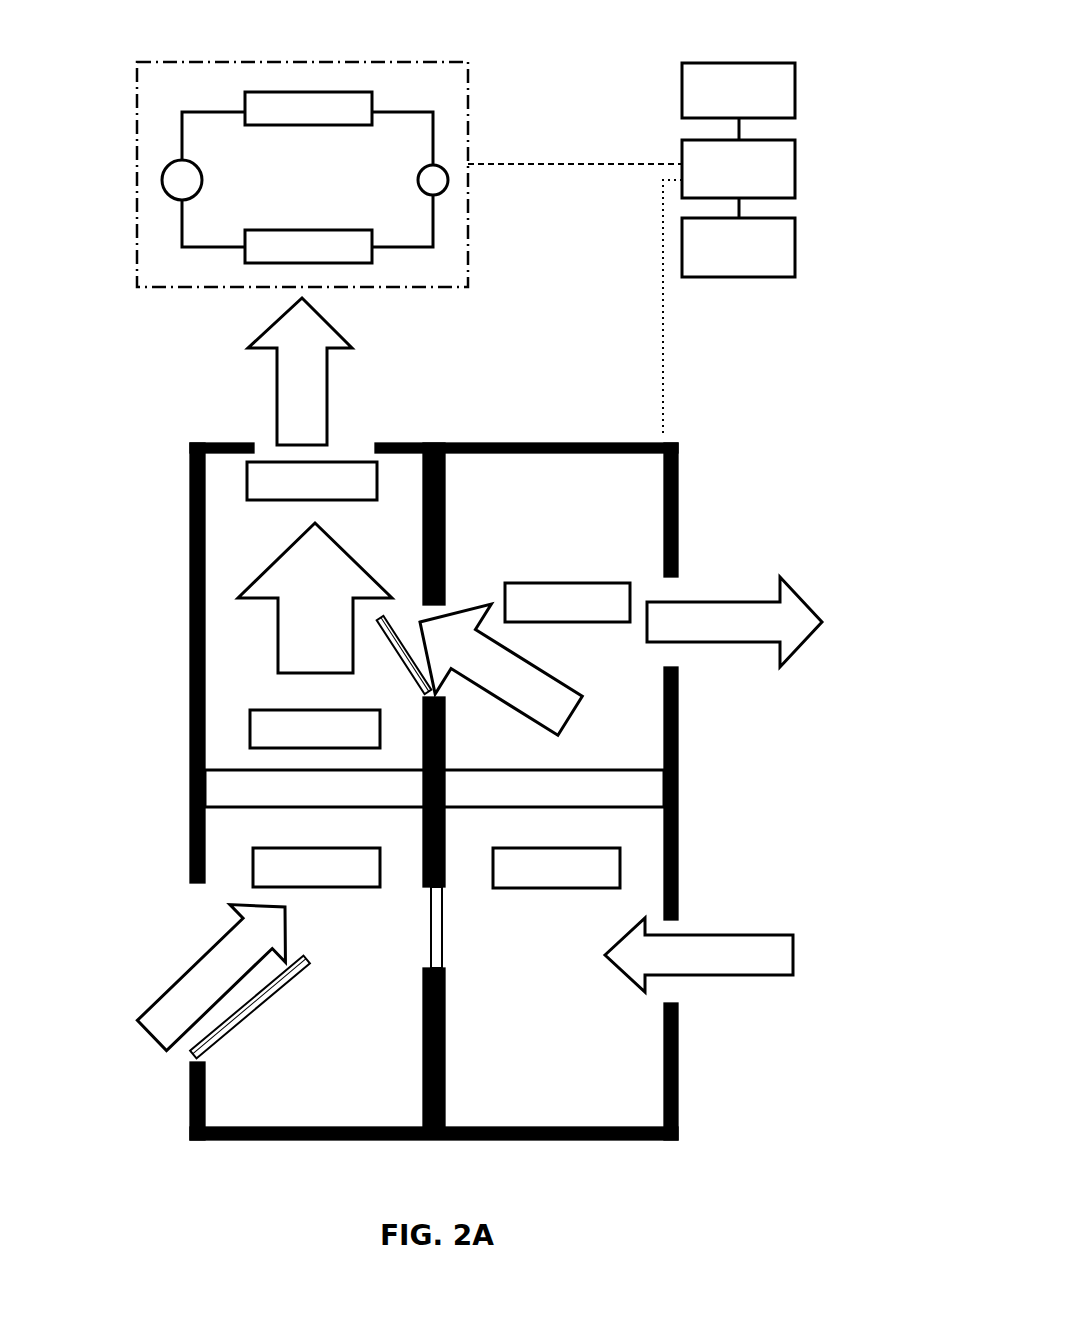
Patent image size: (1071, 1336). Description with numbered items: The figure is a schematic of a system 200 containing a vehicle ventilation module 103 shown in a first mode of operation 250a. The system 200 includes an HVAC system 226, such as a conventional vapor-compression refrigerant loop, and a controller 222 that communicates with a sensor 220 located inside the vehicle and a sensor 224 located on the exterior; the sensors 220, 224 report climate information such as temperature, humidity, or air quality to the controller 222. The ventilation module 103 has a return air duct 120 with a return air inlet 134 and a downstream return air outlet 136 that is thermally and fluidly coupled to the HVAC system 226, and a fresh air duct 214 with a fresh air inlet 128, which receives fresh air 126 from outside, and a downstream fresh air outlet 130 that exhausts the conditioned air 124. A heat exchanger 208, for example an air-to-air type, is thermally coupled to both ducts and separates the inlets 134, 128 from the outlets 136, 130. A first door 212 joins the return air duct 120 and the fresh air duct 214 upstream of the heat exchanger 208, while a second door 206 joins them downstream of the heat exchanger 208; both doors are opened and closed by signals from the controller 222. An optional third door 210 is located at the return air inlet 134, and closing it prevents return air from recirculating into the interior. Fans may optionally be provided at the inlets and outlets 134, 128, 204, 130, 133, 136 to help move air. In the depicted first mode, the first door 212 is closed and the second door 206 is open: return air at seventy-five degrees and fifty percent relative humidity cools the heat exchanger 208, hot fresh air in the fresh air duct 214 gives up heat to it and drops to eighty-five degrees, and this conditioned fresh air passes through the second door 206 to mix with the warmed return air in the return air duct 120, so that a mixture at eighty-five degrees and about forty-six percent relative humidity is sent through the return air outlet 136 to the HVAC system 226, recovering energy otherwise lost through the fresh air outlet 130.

The system 200 is at (448, 37).
The HVAC system 226 is at (470, 125).
The sensor 220 is at (738, 90).
The controller 222 is at (631, 277).
The sensor 224 is at (738, 247).
The first mode of operation 250a is at (748, 380).
The vehicle ventilation module 103 is at (190, 657).
The return air duct 120 is at (232, 543).
The return air outlet 136 is at (353, 447).
The second door 206 is at (392, 618).
The outlet 204 is at (448, 610).
The air 124 is at (734, 622).
The fresh air outlet 130 is at (667, 655).
The heat exchanger 208 is at (678, 775).
The outlet 133 is at (450, 930).
The return air inlet 134 is at (212, 907).
The third door 210 is at (240, 1030).
The first door 212 is at (450, 945).
The fresh air duct 214 is at (582, 1050).
The fresh air 126 is at (699, 955).
The fresh air inlet 128 is at (668, 985).